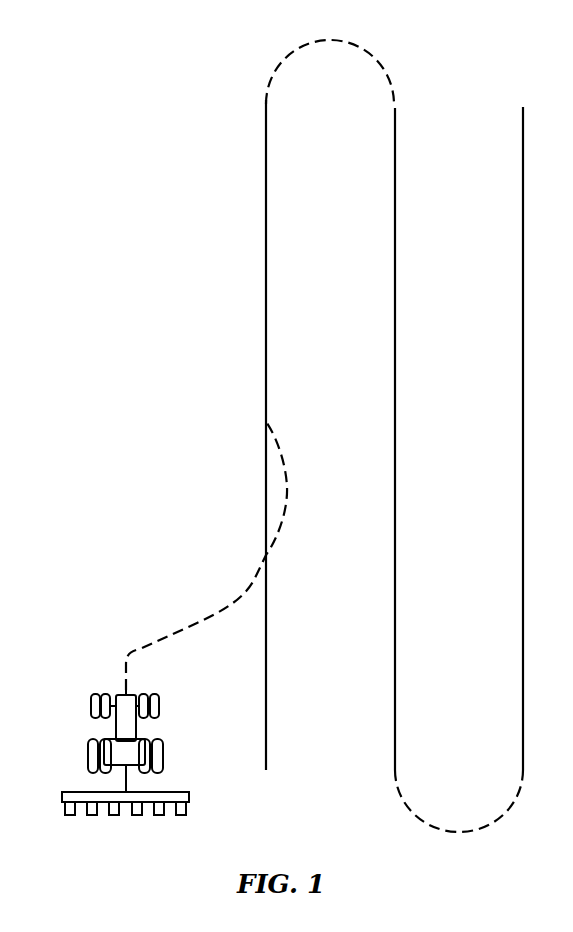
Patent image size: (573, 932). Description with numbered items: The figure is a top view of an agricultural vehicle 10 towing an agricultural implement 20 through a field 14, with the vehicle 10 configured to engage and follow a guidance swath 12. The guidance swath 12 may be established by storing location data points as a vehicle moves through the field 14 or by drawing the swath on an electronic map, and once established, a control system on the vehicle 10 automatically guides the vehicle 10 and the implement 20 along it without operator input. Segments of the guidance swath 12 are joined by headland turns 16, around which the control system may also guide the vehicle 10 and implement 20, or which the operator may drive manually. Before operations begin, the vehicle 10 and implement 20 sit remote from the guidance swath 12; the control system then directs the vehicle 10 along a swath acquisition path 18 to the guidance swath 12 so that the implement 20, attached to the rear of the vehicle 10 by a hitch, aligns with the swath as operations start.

The agricultural vehicle 10 is at (116, 727).
The guidance swath 12 is at (267, 325).
The field 14 is at (168, 217).
The headland turns 16 is at (328, 42).
The swath acquisition path 18 is at (196, 623).
The agricultural implement 20 is at (62, 793).